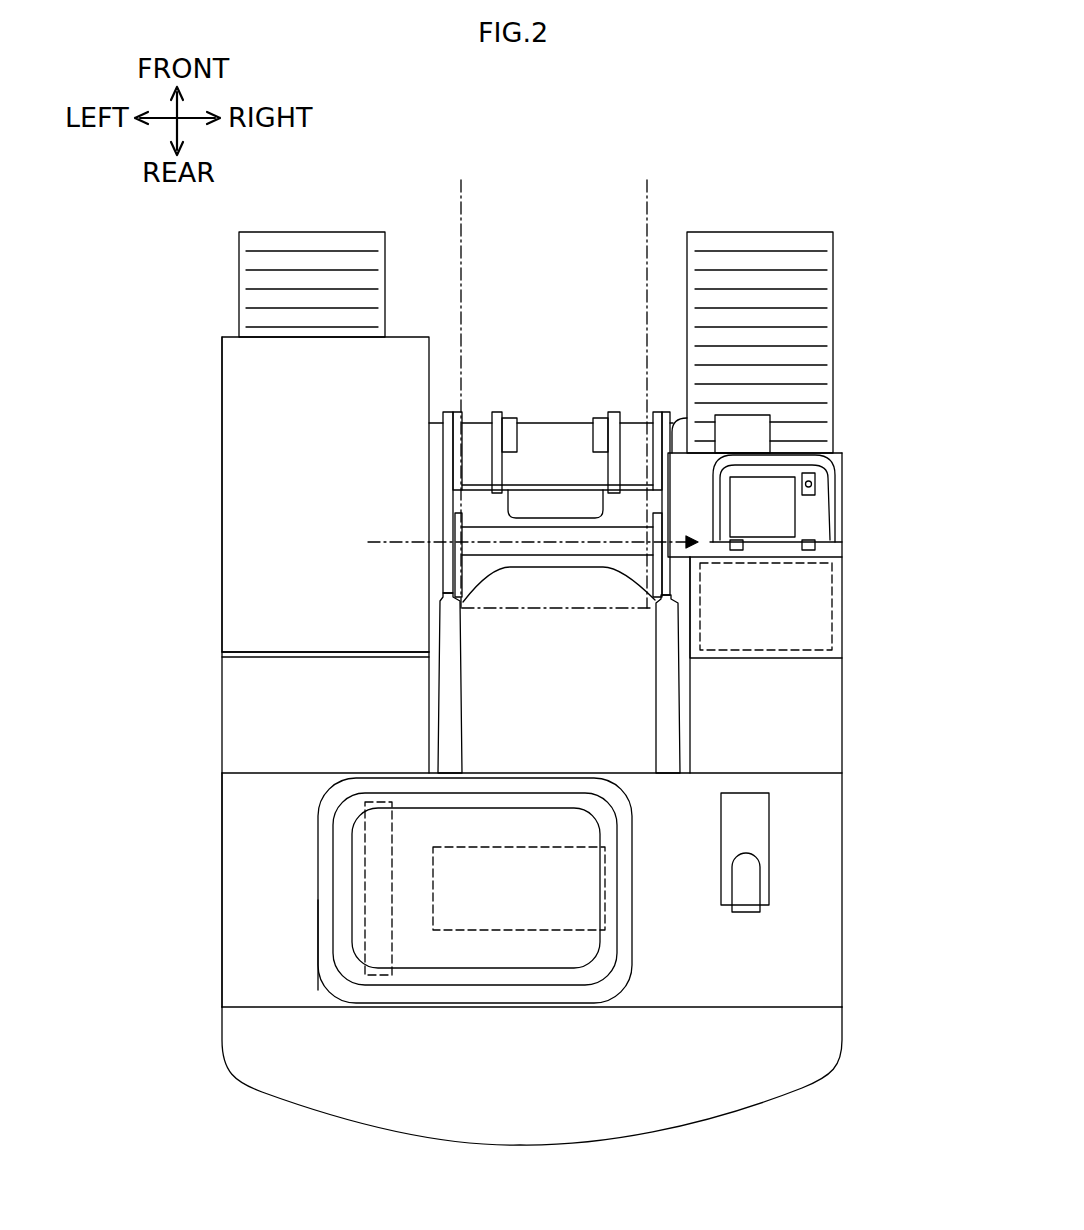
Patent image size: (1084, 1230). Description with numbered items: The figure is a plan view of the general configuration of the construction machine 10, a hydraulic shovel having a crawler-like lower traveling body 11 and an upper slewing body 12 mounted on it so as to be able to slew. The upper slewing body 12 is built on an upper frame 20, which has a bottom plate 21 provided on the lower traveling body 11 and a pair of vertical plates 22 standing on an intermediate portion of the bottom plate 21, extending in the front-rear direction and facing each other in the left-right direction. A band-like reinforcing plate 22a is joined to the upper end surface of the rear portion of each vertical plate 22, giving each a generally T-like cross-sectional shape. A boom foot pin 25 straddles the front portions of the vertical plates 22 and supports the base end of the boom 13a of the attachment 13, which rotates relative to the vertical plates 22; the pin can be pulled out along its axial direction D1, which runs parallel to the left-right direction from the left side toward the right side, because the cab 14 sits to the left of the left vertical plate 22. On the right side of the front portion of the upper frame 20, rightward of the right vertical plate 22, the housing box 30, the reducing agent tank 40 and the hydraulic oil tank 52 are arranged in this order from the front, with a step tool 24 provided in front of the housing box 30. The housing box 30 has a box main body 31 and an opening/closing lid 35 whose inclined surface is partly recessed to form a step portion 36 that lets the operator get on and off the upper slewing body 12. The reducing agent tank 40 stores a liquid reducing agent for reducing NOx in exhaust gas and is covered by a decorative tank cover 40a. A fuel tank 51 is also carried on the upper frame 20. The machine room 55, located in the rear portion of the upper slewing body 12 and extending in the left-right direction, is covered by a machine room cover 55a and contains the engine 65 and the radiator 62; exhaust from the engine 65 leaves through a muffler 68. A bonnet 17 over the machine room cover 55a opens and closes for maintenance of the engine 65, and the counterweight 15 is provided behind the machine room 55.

The construction machine 10 is at (870, 258).
The lower traveling body 11 is at (236, 298).
The upper slewing body 12 is at (210, 387).
The attachment 13 is at (461, 212).
The boom 13a is at (648, 205).
The cab 14 is at (224, 485).
The counterweight 15 is at (845, 1025).
The bonnet 17 is at (632, 870).
The upper frame 20 is at (678, 421).
The bottom plate 21 is at (550, 422).
The vertical plates 22 is at (448, 503).
The reinforcing plate 22a is at (462, 700).
The step tool 24 is at (757, 418).
The boom foot pin 25 is at (553, 555).
The housing box 30 is at (838, 462).
The box main body 31 is at (835, 480).
The opening/closing lid 35 is at (825, 515).
The step portion 36 is at (775, 485).
The reducing agent tank 40 is at (834, 567).
The tank cover 40a is at (838, 540).
The fuel tank 51 is at (223, 698).
The hydraulic oil tank 52 is at (838, 635).
The machine room 55 is at (240, 905).
The machine room cover 55a is at (223, 858).
The radiator 62 is at (378, 975).
The engine 65 is at (517, 930).
The muffler 68 is at (745, 912).
The axial direction D1 is at (415, 545).